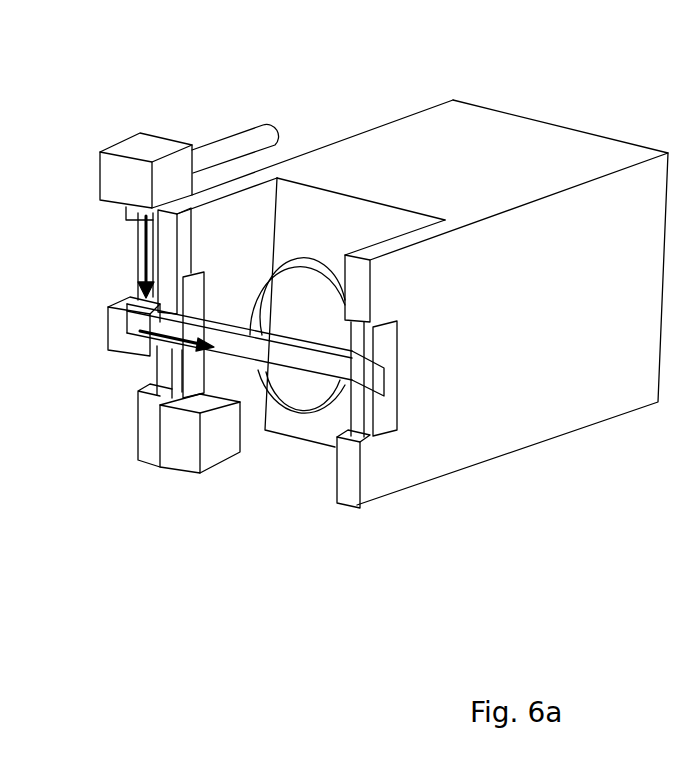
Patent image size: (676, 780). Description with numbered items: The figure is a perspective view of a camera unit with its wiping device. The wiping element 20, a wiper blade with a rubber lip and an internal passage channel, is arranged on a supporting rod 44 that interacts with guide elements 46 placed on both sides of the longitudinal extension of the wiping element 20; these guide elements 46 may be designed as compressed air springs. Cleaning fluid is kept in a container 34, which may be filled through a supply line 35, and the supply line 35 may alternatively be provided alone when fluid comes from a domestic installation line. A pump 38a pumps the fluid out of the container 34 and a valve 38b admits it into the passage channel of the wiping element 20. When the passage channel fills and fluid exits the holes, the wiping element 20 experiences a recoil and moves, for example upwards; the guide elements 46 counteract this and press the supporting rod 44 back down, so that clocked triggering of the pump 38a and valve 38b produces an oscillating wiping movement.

The wiping element 20 is at (265, 343).
The container 34 is at (123, 180).
The supply line 35 is at (242, 152).
The pump 38a is at (120, 323).
The valve 38b is at (183, 447).
The supporting rod 44 is at (373, 390).
The guide elements 46 is at (350, 412).